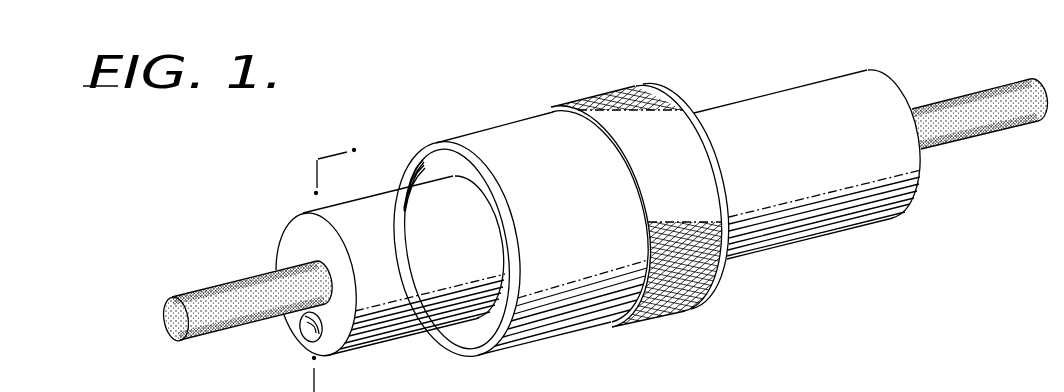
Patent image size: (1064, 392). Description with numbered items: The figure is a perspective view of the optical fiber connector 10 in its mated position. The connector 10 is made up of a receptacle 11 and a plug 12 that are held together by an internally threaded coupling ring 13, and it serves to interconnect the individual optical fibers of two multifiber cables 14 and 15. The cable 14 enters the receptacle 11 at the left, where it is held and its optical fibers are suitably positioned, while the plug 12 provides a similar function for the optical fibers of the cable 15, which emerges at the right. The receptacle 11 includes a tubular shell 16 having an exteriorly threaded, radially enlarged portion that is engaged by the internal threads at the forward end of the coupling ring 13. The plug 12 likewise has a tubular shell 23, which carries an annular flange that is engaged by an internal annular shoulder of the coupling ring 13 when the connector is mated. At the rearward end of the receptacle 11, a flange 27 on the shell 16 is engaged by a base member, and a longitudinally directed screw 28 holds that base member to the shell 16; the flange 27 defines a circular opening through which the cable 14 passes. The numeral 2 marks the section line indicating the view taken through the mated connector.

The section line 2- 2 is at (305, 390).
The connector 10 is at (603, 205).
The receptacle 11 is at (377, 349).
The plug 12 is at (748, 191).
The coupling ring 13 is at (469, 140).
The multifiber cable 14 is at (210, 291).
The multifiber cable 15 is at (973, 137).
The tubular shell 16 is at (363, 267).
The tubular shell 23 is at (727, 106).
The flange 27 is at (287, 243).
The screw 28 is at (301, 338).